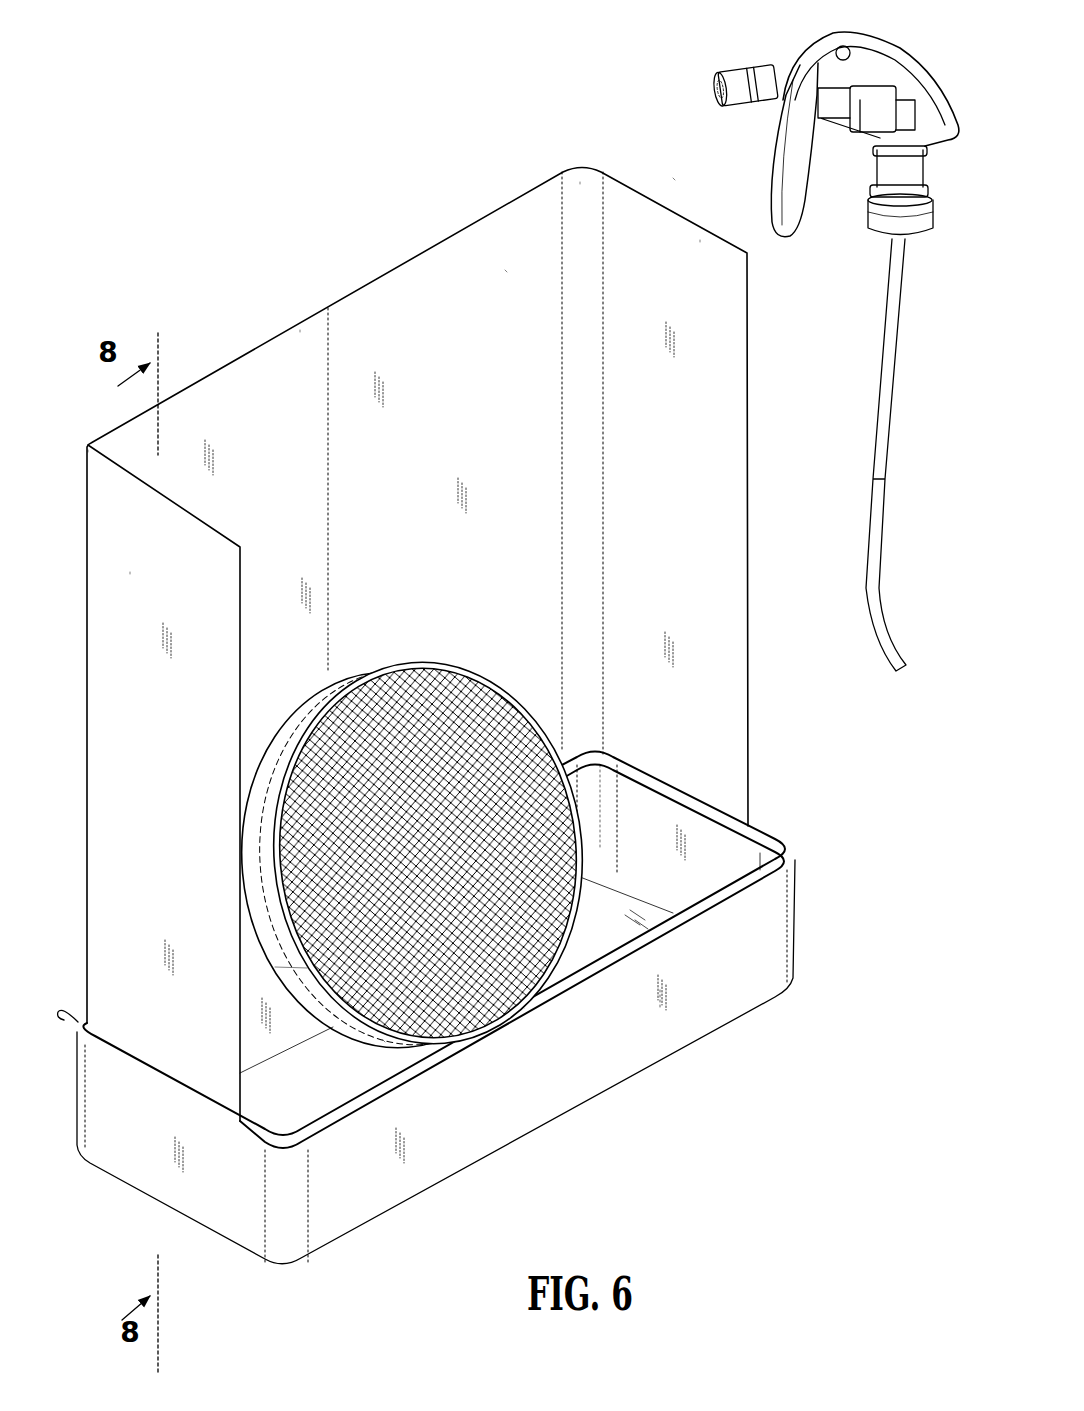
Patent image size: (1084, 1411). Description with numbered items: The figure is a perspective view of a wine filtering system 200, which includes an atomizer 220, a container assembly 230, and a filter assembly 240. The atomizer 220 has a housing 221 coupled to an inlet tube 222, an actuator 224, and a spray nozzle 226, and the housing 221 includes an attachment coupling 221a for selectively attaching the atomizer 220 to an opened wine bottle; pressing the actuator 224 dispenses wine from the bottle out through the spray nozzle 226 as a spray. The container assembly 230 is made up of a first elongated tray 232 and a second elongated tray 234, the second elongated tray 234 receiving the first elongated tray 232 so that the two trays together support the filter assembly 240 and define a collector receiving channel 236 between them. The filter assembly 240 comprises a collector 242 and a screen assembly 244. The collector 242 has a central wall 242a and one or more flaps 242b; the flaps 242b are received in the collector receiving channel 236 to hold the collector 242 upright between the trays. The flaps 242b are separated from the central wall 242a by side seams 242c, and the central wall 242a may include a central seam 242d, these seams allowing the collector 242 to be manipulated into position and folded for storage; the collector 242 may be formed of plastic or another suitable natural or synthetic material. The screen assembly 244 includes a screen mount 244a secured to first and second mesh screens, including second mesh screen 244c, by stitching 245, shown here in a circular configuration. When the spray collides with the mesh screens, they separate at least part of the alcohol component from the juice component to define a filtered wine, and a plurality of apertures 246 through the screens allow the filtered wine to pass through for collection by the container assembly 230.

The wine filtering system 200 is at (676, 175).
The atomizer 220 is at (826, 374).
The housing 221 is at (893, 100).
The attachment coupling 221a is at (908, 222).
The inlet tube 222 is at (863, 620).
The actuator 224 is at (790, 213).
The spray nozzle 226 is at (737, 68).
The container assembly 230 is at (766, 965).
The first elongated tray 232 is at (718, 838).
The second elongated tray 234 is at (665, 1045).
The collector receiving channel 236 is at (70, 1002).
The filter assembly 240 is at (508, 268).
The collector 242 is at (113, 777).
The central wall 242a is at (437, 313).
The flaps 242b is at (673, 243).
The side seams 242c is at (580, 182).
The central seam 242d is at (328, 370).
The screen assembly 244 is at (320, 846).
The screen mount 244a is at (383, 1040).
The second mesh screen 244c is at (460, 1000).
The stitching 245 is at (307, 968).
The apertures 246 is at (472, 717).